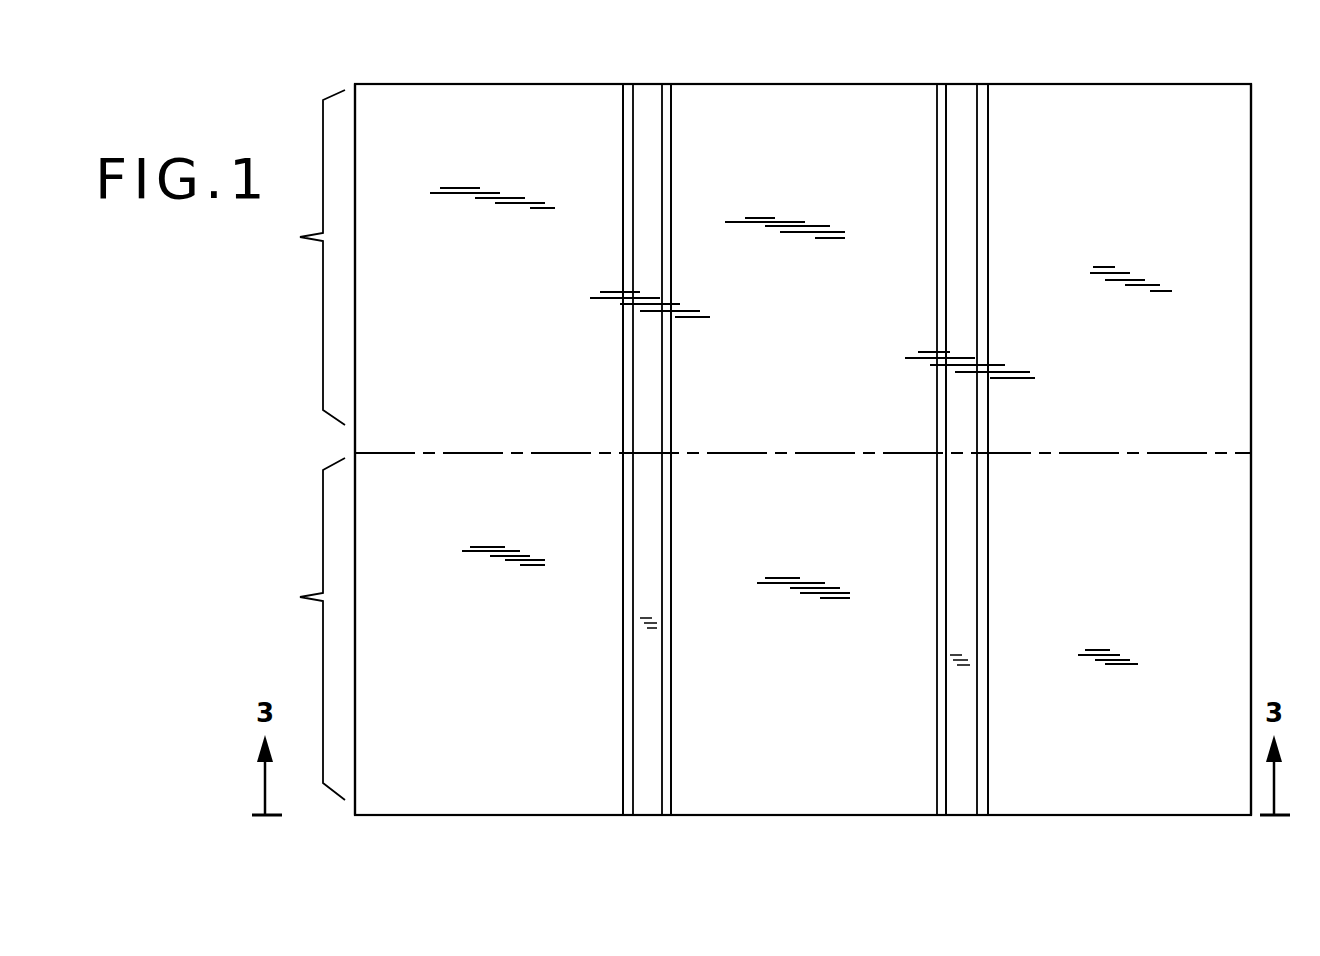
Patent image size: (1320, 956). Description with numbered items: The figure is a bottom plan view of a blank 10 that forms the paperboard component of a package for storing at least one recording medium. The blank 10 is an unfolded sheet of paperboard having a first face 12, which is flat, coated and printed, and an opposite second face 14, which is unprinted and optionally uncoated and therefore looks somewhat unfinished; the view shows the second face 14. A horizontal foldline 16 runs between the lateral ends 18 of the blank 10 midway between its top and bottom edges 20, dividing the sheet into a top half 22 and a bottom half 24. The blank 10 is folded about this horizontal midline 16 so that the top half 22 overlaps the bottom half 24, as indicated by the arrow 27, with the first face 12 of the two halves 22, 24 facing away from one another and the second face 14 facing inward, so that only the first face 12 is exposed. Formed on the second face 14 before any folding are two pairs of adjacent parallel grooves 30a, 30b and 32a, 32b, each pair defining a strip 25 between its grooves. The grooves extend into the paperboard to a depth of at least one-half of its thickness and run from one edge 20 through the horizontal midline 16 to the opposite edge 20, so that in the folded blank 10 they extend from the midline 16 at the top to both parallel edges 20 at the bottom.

The blank 10 is at (372, 72).
The first face 12 is at (535, 118).
The second face 14 is at (818, 137).
The horizontal foldline 16 is at (380, 453).
The lateral ends 18 is at (357, 357).
The top and bottom edges 20 is at (875, 84).
The top half 22 is at (297, 257).
The bottom half 24 is at (297, 629).
The strip 25 is at (648, 356).
The arrow 27 is at (1273, 484).
The groove 30a is at (627, 812).
The groove 30b is at (667, 812).
The groove 32a is at (944, 812).
The groove 32b is at (985, 812).